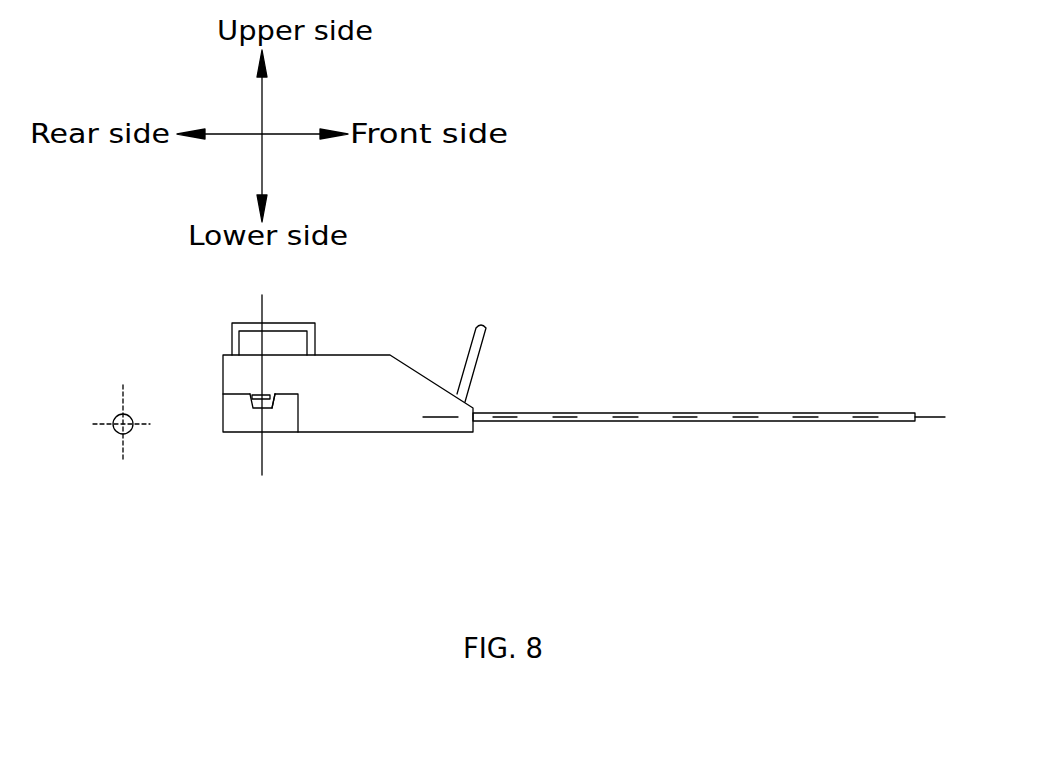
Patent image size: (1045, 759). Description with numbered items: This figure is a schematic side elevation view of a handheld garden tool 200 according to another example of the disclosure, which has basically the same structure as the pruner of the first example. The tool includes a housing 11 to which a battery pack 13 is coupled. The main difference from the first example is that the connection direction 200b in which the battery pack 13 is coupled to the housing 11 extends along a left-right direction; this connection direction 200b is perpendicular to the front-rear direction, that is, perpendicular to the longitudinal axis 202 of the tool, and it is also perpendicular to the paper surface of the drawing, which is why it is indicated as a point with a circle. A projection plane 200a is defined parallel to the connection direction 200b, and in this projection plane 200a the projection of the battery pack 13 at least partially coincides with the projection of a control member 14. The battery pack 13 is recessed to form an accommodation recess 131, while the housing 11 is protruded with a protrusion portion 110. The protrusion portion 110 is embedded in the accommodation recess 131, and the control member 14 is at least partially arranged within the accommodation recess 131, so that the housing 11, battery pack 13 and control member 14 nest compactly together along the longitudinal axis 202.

The housing 11 is at (390, 355).
The battery pack 13 is at (240, 412).
The control member 14 is at (258, 394).
The protrusion portion 110 is at (250, 407).
The accommodation recess 131 is at (270, 408).
The handheld garden tool 200 is at (638, 268).
The projection plane 200a is at (262, 462).
The connection direction 200b is at (120, 425).
The longitudinal axis 202 is at (560, 417).